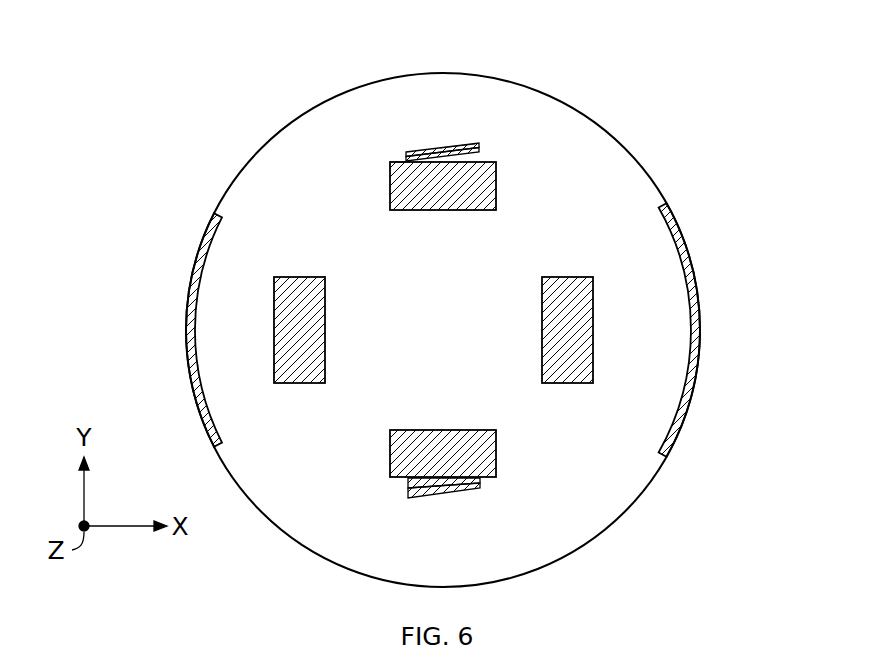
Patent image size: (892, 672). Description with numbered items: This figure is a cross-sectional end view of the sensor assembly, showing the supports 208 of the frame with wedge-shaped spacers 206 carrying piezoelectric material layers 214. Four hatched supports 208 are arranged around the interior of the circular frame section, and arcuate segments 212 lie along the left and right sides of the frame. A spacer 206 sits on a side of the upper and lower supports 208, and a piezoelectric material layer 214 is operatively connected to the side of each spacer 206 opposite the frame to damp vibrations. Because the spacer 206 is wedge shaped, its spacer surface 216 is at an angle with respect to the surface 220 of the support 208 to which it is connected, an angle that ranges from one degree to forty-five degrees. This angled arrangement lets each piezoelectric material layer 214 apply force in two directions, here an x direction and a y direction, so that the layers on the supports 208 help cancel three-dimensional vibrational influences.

The spacer 206 is at (482, 152).
The support 208 is at (497, 195).
The arcuate segment 212 is at (697, 318).
The piezoelectric material layer 214 is at (470, 145).
The spacer surface 216 is at (437, 152).
The surface of support 220 is at (405, 161).